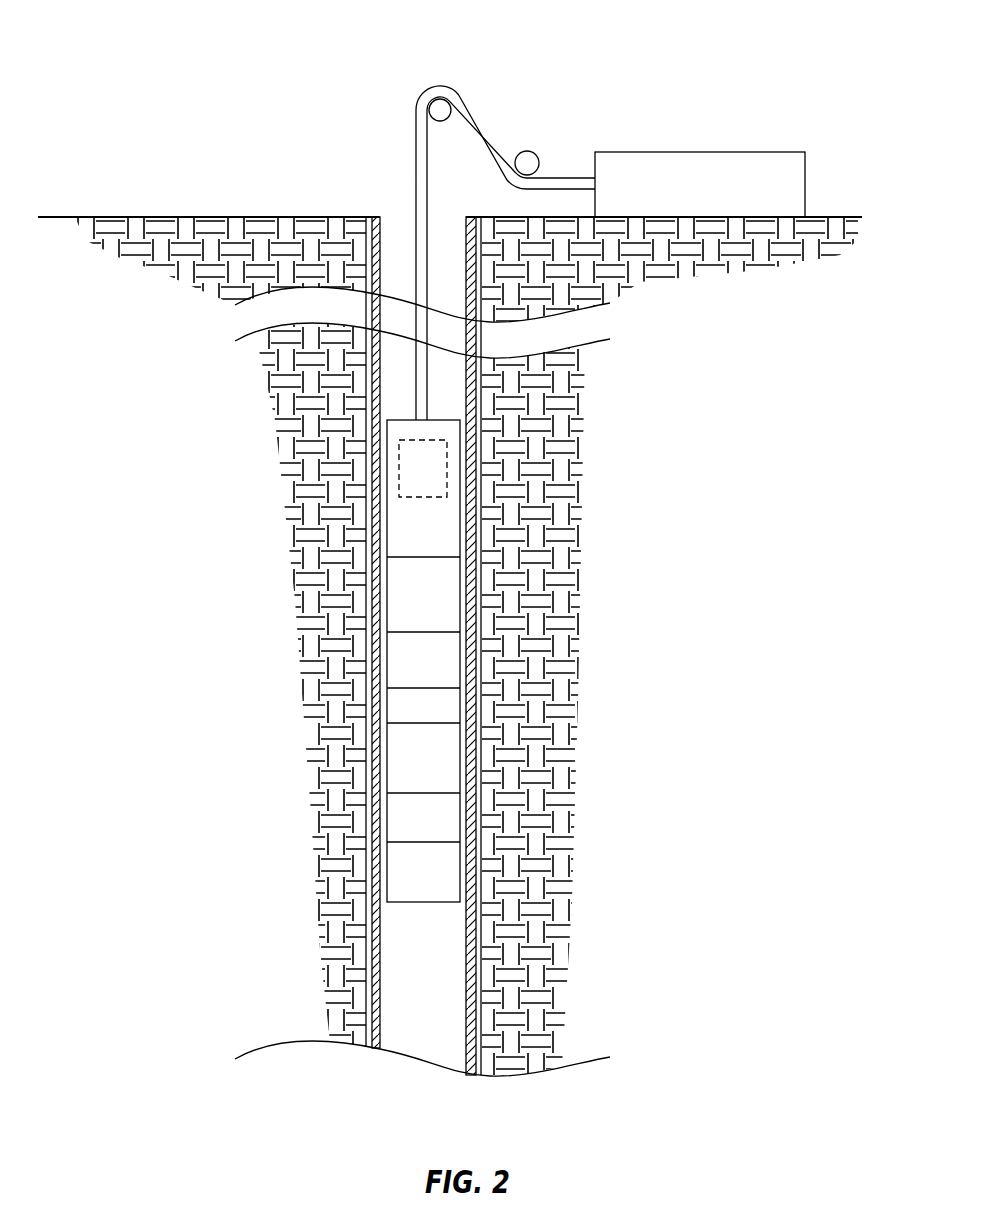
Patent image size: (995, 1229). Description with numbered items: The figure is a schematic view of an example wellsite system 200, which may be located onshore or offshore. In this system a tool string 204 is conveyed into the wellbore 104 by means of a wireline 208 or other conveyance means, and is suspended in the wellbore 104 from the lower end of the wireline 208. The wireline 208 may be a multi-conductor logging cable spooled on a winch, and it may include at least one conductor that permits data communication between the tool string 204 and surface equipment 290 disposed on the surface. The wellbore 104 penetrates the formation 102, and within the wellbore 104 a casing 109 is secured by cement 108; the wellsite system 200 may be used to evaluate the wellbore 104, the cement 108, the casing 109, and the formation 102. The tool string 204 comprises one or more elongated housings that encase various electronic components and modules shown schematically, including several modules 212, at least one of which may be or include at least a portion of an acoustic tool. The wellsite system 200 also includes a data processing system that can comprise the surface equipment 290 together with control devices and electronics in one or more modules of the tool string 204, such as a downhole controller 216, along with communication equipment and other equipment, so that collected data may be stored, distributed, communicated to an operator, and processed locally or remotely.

The wellsite system 200 is at (250, 62).
The wellbore 104 is at (391, 192).
The wireline 208 is at (478, 124).
The surface equipment 290 is at (718, 152).
The formation 102 is at (283, 382).
The cement 108 is at (370, 462).
The casing 109 is at (470, 505).
The downhole controller 216 is at (447, 453).
The modules 212 is at (387, 537).
The tool string 204 is at (421, 921).